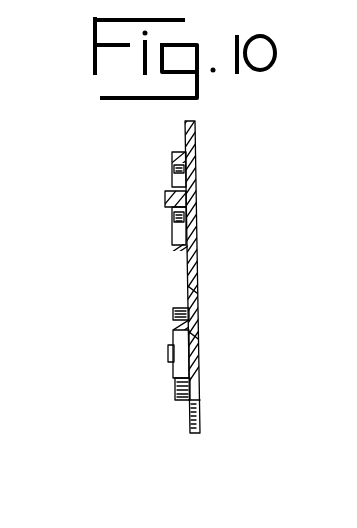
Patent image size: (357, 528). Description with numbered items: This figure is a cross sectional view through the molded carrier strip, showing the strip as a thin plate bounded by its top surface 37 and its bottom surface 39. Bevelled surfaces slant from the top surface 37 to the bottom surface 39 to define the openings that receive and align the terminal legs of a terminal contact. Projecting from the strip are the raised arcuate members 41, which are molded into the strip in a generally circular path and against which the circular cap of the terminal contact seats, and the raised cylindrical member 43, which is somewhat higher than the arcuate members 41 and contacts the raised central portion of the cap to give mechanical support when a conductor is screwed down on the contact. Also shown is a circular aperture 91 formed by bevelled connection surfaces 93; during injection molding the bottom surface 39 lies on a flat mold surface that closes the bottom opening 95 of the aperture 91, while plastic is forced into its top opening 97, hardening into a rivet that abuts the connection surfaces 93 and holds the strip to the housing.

The top surface 37 is at (183, 256).
The bottom surface 39 is at (197, 246).
The raised arcuate members 41 is at (172, 154).
The raised cylindrical member 43 is at (165, 194).
The circular aperture 91 is at (178, 342).
The bevelled connection surfaces 93 is at (197, 285).
The bottom opening 95 is at (197, 357).
The top opening 97 is at (178, 366).